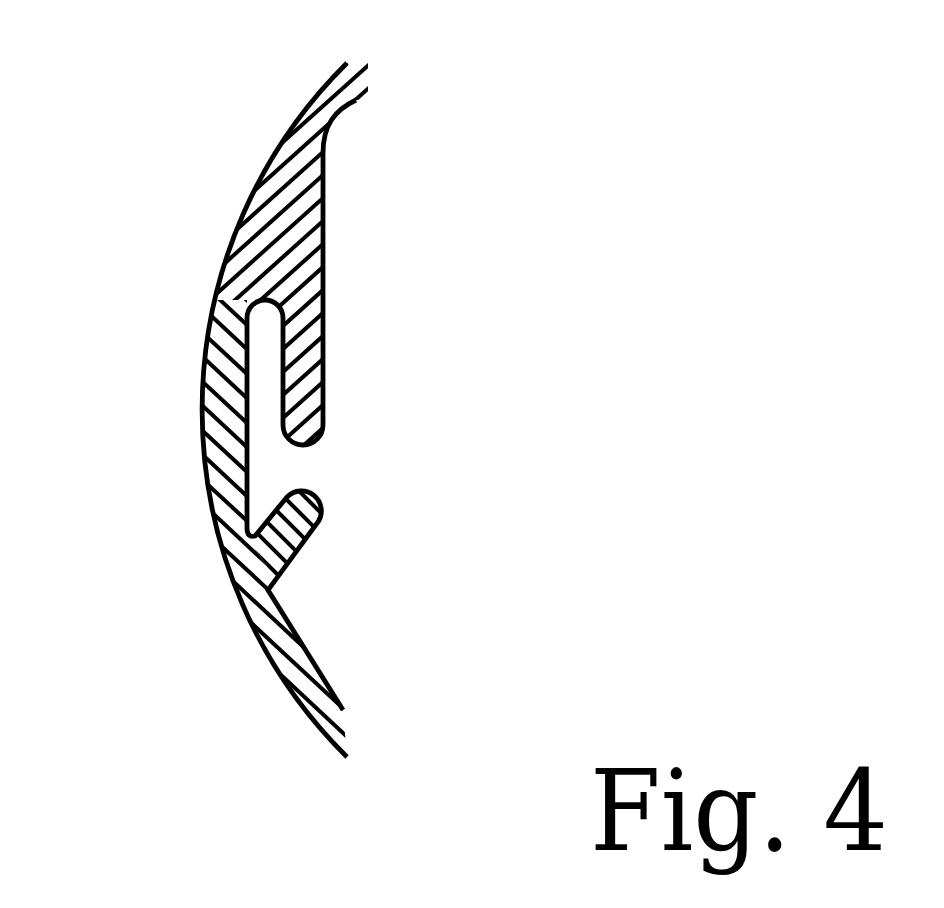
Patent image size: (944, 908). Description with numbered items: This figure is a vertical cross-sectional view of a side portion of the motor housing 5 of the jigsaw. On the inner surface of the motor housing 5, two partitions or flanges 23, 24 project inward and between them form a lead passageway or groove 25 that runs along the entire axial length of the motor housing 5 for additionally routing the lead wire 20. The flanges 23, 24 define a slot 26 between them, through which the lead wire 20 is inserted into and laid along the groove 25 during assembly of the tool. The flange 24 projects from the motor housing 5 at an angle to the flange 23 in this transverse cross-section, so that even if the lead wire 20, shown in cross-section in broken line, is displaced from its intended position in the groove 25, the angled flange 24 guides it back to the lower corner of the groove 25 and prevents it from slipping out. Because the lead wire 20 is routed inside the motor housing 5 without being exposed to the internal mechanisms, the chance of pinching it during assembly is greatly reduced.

The motor housing 5 is at (261, 177).
The lead wire 20 is at (258, 328).
The flange 23 is at (296, 392).
The flange 24 is at (312, 530).
The groove 25 is at (258, 413).
The slot 26 is at (306, 471).